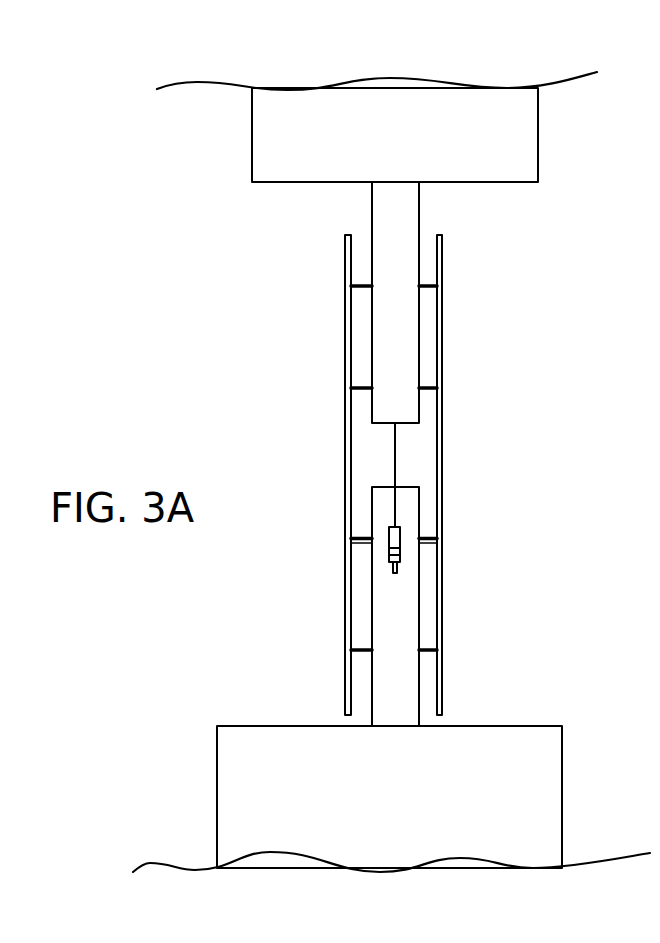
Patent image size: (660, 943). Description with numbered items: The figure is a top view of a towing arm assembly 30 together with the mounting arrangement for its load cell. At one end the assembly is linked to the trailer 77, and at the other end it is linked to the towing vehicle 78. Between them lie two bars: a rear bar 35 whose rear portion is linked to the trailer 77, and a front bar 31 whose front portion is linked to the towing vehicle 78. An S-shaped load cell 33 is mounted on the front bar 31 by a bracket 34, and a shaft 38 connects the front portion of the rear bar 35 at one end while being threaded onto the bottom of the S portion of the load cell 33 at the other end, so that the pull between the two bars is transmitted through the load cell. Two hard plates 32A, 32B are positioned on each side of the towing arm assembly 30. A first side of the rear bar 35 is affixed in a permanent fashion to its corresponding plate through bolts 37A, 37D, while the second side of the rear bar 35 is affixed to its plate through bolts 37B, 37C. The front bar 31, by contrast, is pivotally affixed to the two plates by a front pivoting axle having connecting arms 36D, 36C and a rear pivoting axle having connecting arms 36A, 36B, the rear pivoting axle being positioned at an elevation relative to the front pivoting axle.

The towing arm assembly 30 is at (192, 405).
The trailer 77 is at (498, 147).
The rear bar 35 is at (385, 345).
The hard plate 32A is at (345, 507).
The hard plate 32B is at (443, 337).
The bolt 37A is at (353, 287).
The bolt 37B is at (432, 289).
The bolt 37C is at (437, 389).
The bolt 37D is at (363, 389).
The shaft 38 is at (395, 457).
The front bar 31 is at (383, 520).
The S-shaped load cell 33 is at (395, 541).
The bracket 34 is at (393, 568).
The connecting arm 36A is at (362, 651).
The connecting arm 36B is at (437, 650).
The connecting arm 36C is at (435, 543).
The connecting arm 36D is at (365, 541).
The towing vehicle 78 is at (440, 765).